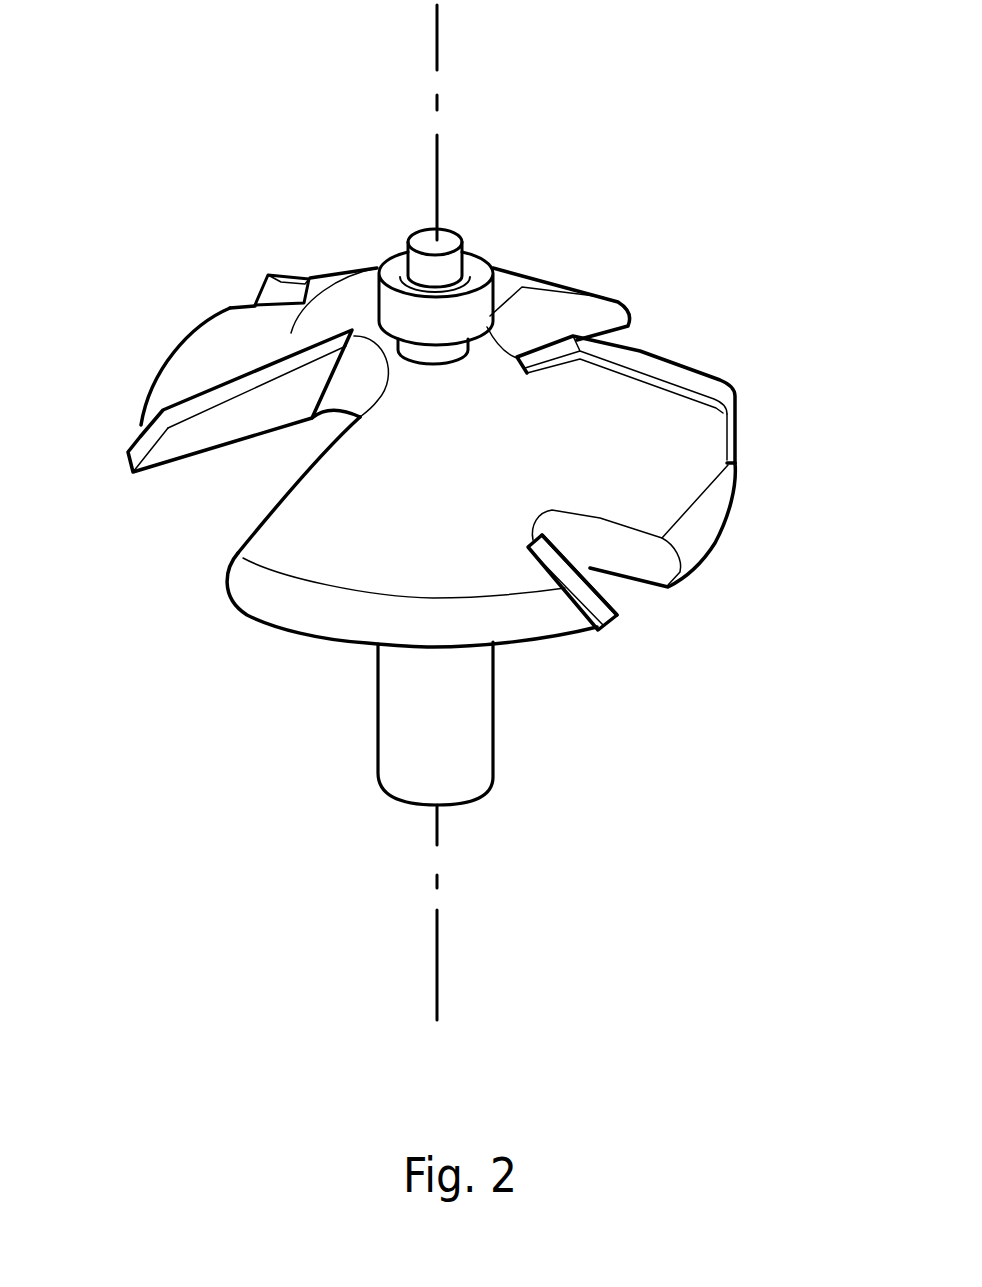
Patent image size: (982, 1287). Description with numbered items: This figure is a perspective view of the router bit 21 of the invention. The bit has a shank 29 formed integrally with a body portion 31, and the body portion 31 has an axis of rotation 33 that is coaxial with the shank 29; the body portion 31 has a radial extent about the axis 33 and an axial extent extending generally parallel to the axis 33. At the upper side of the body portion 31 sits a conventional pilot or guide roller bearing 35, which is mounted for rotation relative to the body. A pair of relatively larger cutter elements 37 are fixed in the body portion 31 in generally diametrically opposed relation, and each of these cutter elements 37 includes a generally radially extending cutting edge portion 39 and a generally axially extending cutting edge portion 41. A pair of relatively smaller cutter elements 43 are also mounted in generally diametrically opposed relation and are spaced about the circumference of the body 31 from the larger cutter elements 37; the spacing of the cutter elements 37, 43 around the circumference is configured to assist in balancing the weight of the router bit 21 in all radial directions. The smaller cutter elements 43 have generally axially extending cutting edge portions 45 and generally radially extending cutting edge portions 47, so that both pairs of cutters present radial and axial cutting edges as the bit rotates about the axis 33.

The router bit 21 is at (672, 247).
The shank 29 is at (477, 758).
The body portion 31 is at (242, 538).
The axis of rotation 33 is at (468, 60).
The pilot or guide roller bearing 35 is at (477, 270).
The cutter elements 37 is at (161, 385).
The radially extending cutting edge portions 39 is at (240, 383).
The axially extending cutting edge portions 41 is at (150, 425).
The cutter elements 43 is at (288, 253).
The axially extending cutting edge portions 45 is at (612, 602).
The radially extending cutting edge portions 47 is at (572, 552).